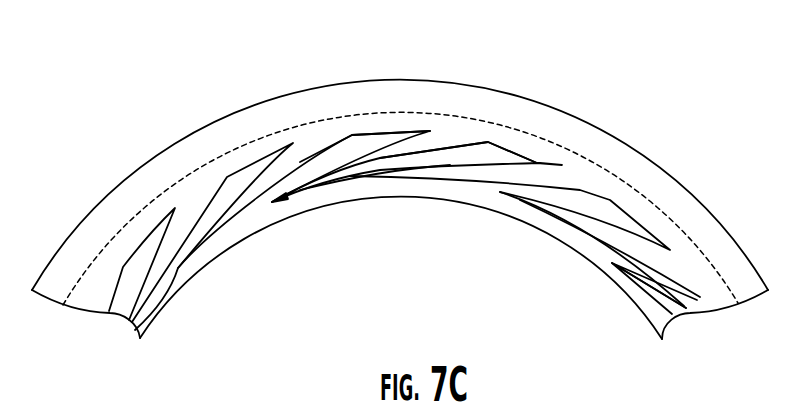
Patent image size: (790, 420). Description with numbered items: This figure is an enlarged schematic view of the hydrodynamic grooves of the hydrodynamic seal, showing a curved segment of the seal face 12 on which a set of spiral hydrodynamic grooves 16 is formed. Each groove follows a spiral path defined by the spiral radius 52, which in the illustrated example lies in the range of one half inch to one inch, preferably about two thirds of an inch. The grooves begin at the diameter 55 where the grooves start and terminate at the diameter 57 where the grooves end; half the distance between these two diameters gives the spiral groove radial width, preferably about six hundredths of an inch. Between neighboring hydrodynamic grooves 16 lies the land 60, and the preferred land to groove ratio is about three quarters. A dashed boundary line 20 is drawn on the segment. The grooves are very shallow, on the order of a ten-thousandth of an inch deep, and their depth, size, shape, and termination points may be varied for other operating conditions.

The stator vane ring segment 12 is at (471, 60).
The boundary line 20 is at (247, 139).
The hydrodynamic grooves 16 is at (537, 163).
The land 60 is at (308, 155).
The diameter where the grooves end 57 is at (497, 144).
The diameter where the grooves start 55 is at (318, 188).
The spiral radius 52 is at (693, 293).